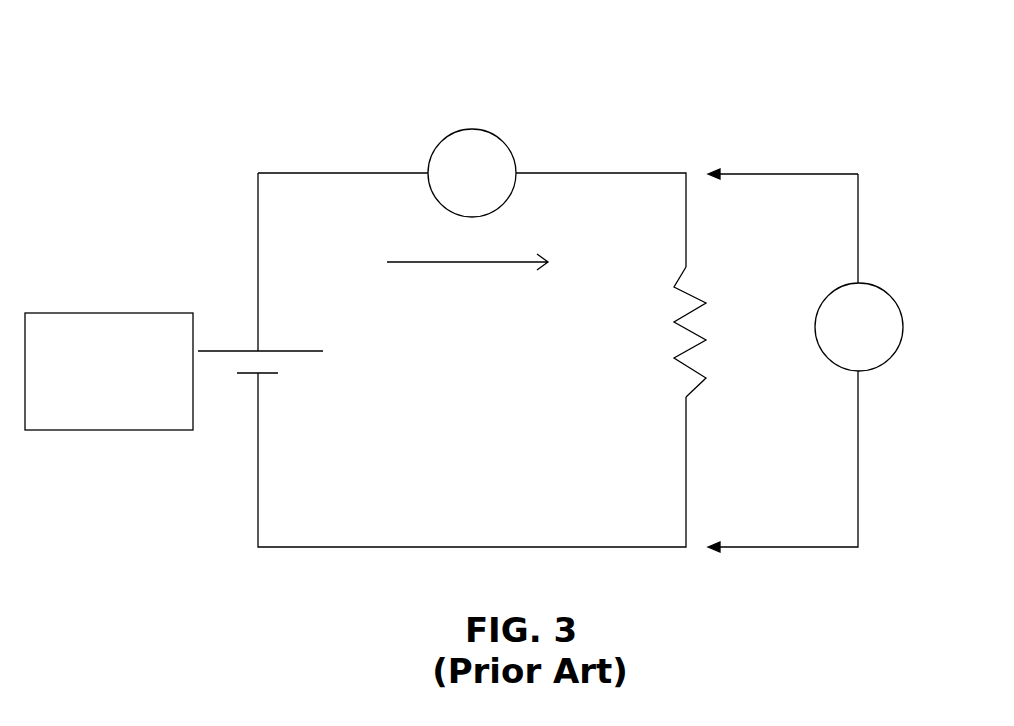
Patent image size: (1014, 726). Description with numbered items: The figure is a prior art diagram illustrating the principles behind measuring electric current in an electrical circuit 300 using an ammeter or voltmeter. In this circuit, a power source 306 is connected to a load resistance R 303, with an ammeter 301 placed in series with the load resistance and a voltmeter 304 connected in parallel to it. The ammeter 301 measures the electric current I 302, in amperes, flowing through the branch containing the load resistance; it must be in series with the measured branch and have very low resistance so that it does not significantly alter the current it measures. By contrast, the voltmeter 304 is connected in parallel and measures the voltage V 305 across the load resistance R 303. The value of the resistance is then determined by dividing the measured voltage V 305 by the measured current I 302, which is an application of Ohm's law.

The electrical circuit 300 is at (516, 63).
The ammeter 301 is at (453, 163).
The current I 302 is at (470, 297).
The load resistance R 303 is at (618, 328).
The voltmeter 304 is at (880, 330).
The voltage V 305 is at (748, 347).
The power source 306 is at (282, 363).